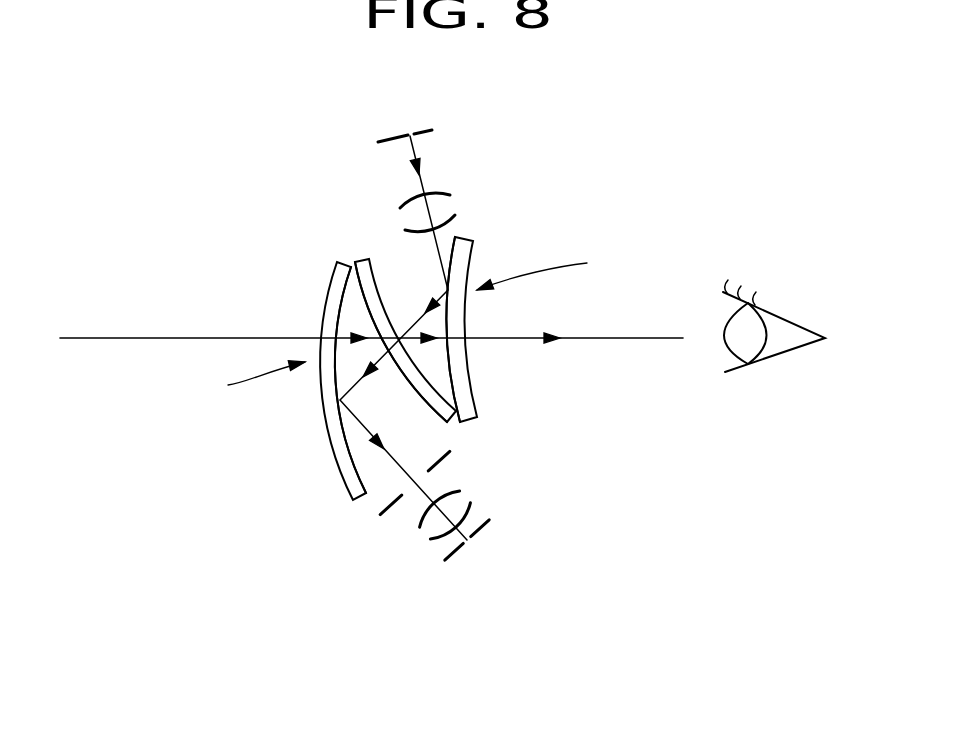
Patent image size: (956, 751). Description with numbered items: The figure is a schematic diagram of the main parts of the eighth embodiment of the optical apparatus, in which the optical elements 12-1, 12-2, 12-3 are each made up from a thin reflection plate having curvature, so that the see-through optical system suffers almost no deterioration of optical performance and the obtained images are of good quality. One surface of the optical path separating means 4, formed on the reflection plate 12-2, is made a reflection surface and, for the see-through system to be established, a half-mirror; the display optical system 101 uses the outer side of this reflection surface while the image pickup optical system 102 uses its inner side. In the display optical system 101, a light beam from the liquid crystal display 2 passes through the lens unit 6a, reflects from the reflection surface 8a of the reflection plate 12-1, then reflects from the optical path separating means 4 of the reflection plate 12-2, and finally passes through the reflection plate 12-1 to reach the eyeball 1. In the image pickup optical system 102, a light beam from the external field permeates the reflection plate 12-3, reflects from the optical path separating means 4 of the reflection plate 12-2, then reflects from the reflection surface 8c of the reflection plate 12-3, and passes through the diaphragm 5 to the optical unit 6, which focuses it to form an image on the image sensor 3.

The eyeball 1 is at (767, 360).
The liquid crystal display (LCD) 2 is at (425, 125).
The image sensor (CCD) 3 is at (487, 528).
The optical path separating means 4 is at (378, 292).
The diaphragm 5 is at (382, 513).
The optical unit 6 is at (425, 528).
The lens unit 6a is at (448, 207).
The reflection surface 8a is at (455, 373).
The reflection surface 8c is at (345, 432).
The reflection plate 12-1 is at (462, 237).
The reflection plate 12-2 is at (362, 260).
The reflection plate 12-3 is at (347, 483).
The display optical system 101 is at (640, 276).
The image pickup optical system 102 is at (222, 400).